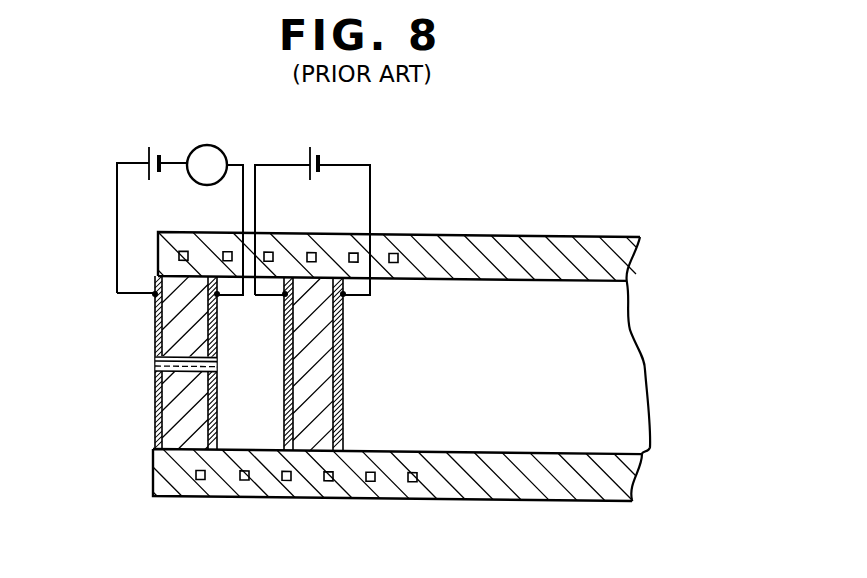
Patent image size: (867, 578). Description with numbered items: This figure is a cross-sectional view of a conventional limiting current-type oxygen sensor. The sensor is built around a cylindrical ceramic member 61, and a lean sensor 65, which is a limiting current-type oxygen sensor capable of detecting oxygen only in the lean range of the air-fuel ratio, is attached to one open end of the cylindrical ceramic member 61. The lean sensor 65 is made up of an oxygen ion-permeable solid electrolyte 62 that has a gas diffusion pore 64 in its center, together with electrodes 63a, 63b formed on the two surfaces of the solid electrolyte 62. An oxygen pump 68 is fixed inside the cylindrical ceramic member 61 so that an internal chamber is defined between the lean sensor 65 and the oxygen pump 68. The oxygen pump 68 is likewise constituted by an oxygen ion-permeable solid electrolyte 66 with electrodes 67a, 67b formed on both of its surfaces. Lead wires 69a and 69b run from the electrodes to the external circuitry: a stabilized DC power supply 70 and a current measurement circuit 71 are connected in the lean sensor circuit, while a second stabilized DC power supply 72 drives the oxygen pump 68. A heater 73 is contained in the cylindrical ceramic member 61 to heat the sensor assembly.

The cylindrical ceramic member 61 is at (553, 251).
The oxygen ion-permeable solid electrolyte 62 is at (175, 395).
The electrode 63a is at (157, 431).
The electrode 63b is at (153, 482).
The gas diffusion pore 64 is at (157, 358).
The lean sensor 65 is at (118, 372).
The oxygen ion-permeable solid electrolyte 66 is at (315, 368).
The electrode 67a is at (297, 395).
The electrode 67b is at (338, 430).
The oxygen pump 68 is at (360, 345).
The lead wire 69a is at (141, 194).
The lead wire 69b is at (354, 194).
The stabilized DC power supply 70 is at (148, 148).
The current measurement circuit 71 is at (213, 146).
The stabilized DC power supply 72 is at (310, 148).
The heater 73 is at (413, 480).